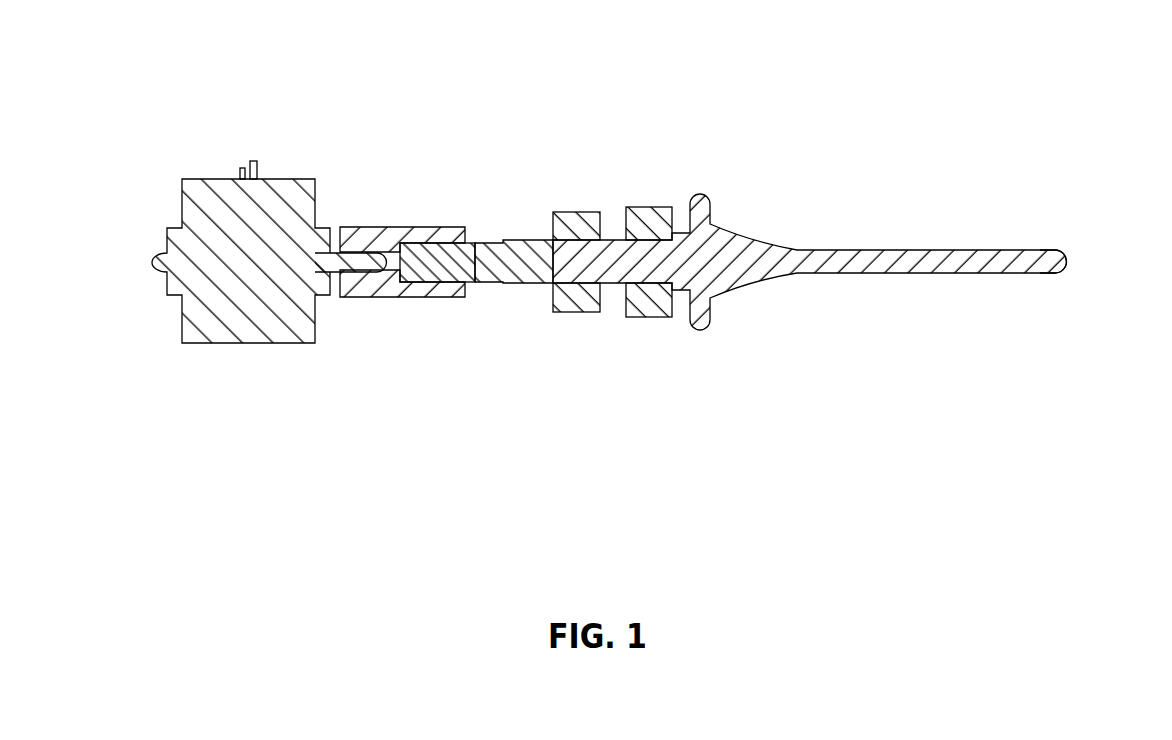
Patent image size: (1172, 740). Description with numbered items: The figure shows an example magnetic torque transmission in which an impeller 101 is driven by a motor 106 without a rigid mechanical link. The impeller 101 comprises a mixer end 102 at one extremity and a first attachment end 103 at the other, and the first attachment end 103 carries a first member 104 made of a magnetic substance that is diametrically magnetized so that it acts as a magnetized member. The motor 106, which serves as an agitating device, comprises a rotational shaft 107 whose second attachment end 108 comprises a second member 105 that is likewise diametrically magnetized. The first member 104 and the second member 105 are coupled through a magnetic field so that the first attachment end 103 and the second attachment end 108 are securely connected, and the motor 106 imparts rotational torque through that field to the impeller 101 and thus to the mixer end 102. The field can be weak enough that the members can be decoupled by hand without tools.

The impeller 101 is at (768, 240).
The mixer end 102 is at (1053, 252).
The first attachment end 103 is at (525, 283).
The first member 104 is at (492, 282).
The second member 105 is at (470, 243).
The motor 106 is at (272, 179).
The rotational shaft 107 is at (338, 272).
The second attachment end 108 is at (383, 228).